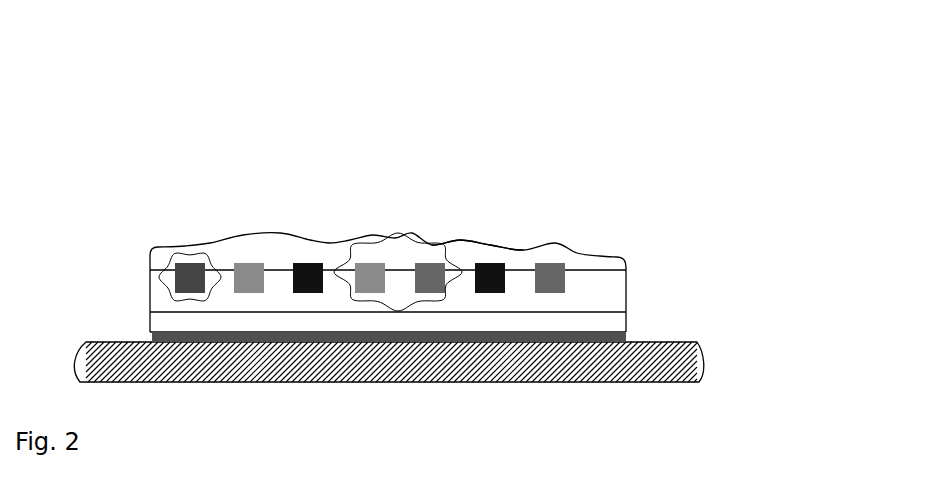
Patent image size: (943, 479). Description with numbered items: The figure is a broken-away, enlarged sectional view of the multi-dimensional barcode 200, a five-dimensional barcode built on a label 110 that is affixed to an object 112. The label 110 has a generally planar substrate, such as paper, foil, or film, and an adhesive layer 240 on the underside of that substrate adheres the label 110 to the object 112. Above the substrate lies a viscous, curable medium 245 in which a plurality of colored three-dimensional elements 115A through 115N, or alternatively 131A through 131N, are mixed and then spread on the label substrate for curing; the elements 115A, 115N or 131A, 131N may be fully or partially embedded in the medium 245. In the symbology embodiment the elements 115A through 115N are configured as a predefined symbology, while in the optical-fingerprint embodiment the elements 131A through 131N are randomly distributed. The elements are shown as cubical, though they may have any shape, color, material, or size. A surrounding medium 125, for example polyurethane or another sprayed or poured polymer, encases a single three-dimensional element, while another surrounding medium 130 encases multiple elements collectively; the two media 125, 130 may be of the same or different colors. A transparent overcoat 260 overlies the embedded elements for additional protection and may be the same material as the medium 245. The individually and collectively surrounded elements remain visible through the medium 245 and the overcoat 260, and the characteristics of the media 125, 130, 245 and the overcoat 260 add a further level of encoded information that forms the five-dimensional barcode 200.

The multi-dimensional barcode 200 is at (28, 36).
The label 110 is at (158, 322).
The object 112 is at (90, 353).
The colored three-dimensional element 115A is at (270, 201).
The colored three-dimensional element 131A is at (189, 262).
The colored three-dimensional element 115N is at (653, 226).
The colored three-dimensional element 131N is at (552, 261).
The surrounding medium 125 is at (216, 261).
The surrounding medium 130 is at (410, 233).
The transparent overcoat 260 is at (478, 241).
The viscous, curable medium 245 is at (618, 299).
The adhesive layer 240 is at (616, 337).